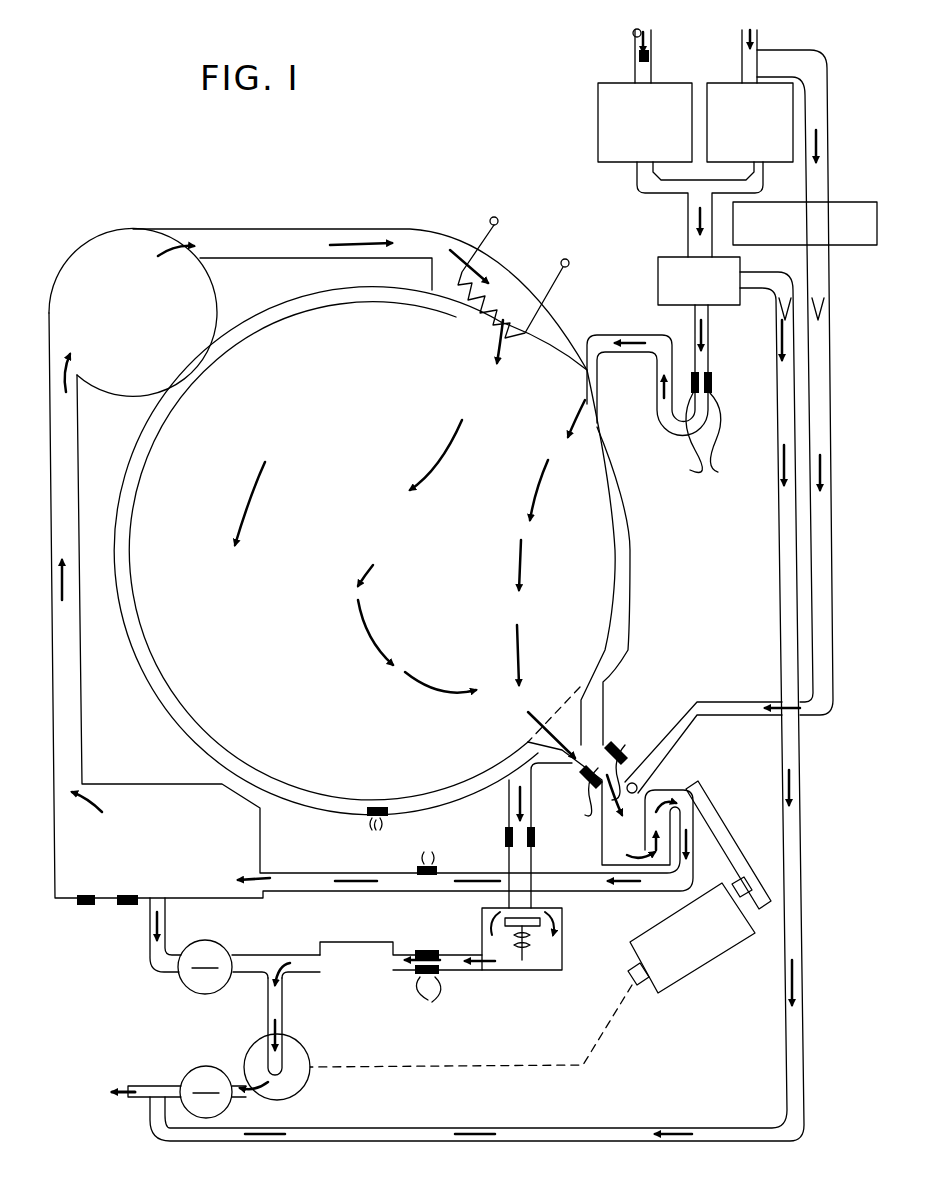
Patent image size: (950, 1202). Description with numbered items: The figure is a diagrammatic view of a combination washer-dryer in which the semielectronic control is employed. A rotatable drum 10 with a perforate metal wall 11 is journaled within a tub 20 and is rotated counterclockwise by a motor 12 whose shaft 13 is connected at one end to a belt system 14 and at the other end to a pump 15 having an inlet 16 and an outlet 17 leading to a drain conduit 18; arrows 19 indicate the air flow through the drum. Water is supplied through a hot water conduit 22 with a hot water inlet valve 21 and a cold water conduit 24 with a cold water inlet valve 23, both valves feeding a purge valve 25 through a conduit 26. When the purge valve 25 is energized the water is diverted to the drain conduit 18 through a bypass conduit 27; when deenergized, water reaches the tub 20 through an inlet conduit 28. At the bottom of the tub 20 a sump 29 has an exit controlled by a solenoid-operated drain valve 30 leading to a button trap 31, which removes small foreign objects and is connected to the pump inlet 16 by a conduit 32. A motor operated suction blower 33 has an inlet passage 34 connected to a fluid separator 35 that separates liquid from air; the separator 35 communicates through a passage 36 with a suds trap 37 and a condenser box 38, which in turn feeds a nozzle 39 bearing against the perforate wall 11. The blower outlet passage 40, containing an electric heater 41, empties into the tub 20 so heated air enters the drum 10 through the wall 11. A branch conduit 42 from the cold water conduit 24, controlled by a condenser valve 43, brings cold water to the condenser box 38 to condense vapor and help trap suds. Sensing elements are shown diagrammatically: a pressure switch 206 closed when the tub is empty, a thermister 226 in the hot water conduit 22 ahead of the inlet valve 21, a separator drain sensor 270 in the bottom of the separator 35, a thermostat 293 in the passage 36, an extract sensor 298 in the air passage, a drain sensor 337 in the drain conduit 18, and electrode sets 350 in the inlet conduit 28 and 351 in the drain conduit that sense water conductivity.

The rotatable drum 10 is at (407, 581).
The perforate metal wall 11 is at (313, 312).
The motor 12 is at (710, 962).
The shaft 13 is at (738, 880).
The belt system 14 is at (735, 830).
The pump 15 is at (310, 1078).
The inlet 16 is at (283, 1012).
The outlet 17 is at (240, 1100).
The drain conduit 18 is at (143, 1086).
The air flow arrows 19 is at (250, 497).
The tub 20 is at (147, 422).
The hot water inlet valve 21 is at (598, 110).
The hot water conduit 22 is at (637, 36).
The cold water inlet valve 23 is at (720, 83).
The cold water conduit 24 is at (762, 46).
The purge valve 25 is at (658, 275).
The conduit 26 is at (688, 222).
The bypass conduit 27 is at (781, 572).
The inlet conduit 28 is at (620, 335).
The sump 29 is at (509, 800).
The drain valve 30 is at (482, 927).
The button trap 31 is at (320, 942).
The conduit 32 is at (253, 955).
The suction blower 33 is at (118, 257).
The inlet passage 34 is at (82, 449).
The fluid separator 35 is at (165, 783).
The passage 36 is at (355, 873).
The suds trap 37 is at (690, 806).
The condenser box 38 is at (612, 847).
The nozzle 39 is at (582, 700).
The outlet passage 40 is at (312, 235).
The electric heater 41 is at (470, 267).
The branch conduit 42 is at (828, 522).
The condenser valve 43 is at (830, 202).
The pressure switch 206 is at (368, 818).
The negative temperature coefficient thermister 226 is at (642, 60).
The separator drain sensor 270 is at (86, 905).
The thermostat 293 is at (428, 866).
The extract sensor 298 is at (632, 755).
The drain sensor 337 is at (420, 975).
The sensor electrodes 350 is at (708, 372).
The sensor electrodes 351 is at (506, 848).